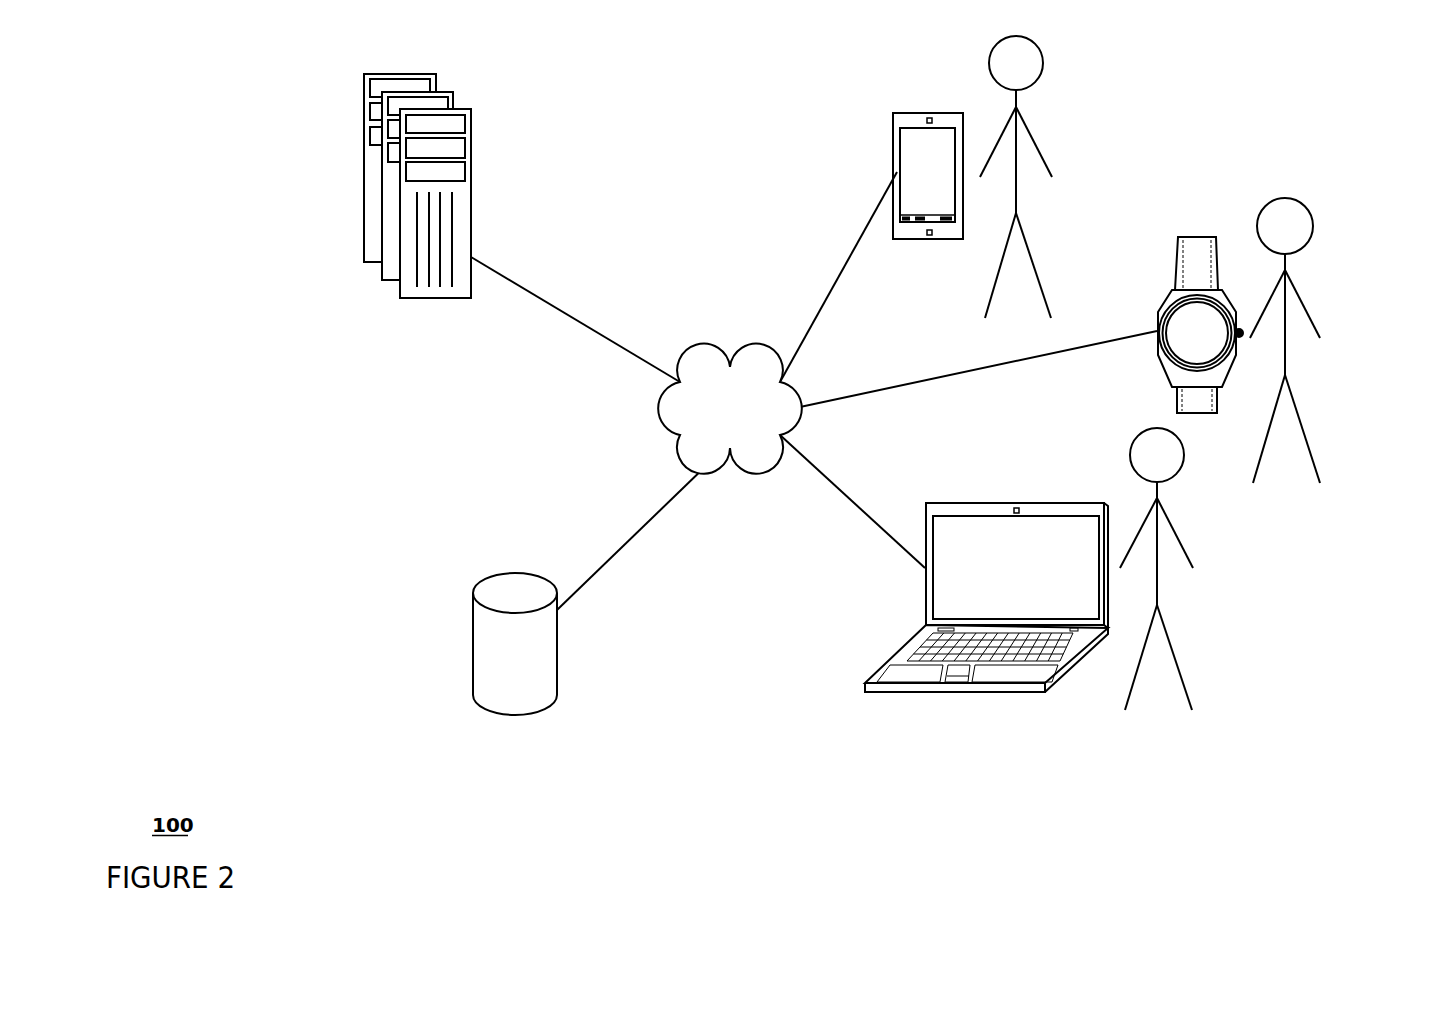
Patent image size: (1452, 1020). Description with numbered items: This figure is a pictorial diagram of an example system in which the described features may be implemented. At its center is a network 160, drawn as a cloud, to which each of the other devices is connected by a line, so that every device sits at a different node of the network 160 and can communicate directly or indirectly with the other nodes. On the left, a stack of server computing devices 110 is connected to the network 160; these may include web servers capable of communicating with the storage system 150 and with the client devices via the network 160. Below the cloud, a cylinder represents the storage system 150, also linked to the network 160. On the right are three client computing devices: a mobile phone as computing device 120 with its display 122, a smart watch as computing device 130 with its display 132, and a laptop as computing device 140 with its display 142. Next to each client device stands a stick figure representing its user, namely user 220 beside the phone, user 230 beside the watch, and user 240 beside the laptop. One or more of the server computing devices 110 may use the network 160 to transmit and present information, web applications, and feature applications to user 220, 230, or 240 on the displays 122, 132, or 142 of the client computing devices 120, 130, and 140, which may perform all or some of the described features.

The computing device 110 is at (471, 152).
The computing device 120 is at (874, 176).
The display 122 is at (900, 172).
The computing device 130 is at (1151, 325).
The display 132 is at (1162, 362).
The computing device 140 is at (962, 597).
The display 142 is at (933, 610).
The storage system 150 is at (557, 663).
The network 160 is at (730, 409).
The user 220 is at (1050, 165).
The user 230 is at (1316, 328).
The user 240 is at (1193, 558).